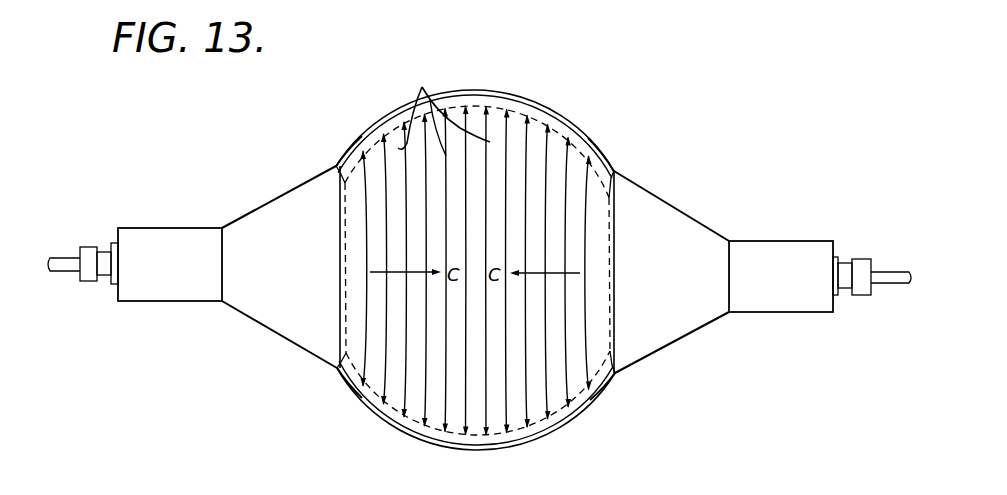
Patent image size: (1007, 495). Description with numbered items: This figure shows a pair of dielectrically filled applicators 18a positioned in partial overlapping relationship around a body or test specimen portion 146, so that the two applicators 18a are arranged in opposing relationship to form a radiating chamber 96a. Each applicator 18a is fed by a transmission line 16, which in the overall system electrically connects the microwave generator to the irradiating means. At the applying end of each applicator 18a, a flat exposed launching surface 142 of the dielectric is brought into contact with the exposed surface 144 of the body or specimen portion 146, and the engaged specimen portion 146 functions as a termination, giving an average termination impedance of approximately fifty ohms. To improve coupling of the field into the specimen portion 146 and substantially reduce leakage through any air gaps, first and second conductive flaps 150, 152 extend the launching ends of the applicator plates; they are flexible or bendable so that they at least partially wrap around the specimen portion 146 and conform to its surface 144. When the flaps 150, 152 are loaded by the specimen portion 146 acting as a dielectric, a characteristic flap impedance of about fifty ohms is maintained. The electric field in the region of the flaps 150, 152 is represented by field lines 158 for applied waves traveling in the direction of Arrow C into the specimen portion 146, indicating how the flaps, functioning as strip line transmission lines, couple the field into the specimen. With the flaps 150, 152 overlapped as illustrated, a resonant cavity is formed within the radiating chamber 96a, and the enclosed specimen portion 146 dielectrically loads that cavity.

The transmission line 16 is at (64, 258).
The applicator 18a is at (281, 353).
The radiating chamber 96a is at (570, 145).
The launching surface 142 is at (344, 242).
The exposed surface 144 is at (341, 155).
The body or specimen portion 146 is at (522, 125).
The first conductive flap 150 is at (343, 386).
The second conductive flap 152 is at (356, 146).
The field lines 158 is at (441, 110).